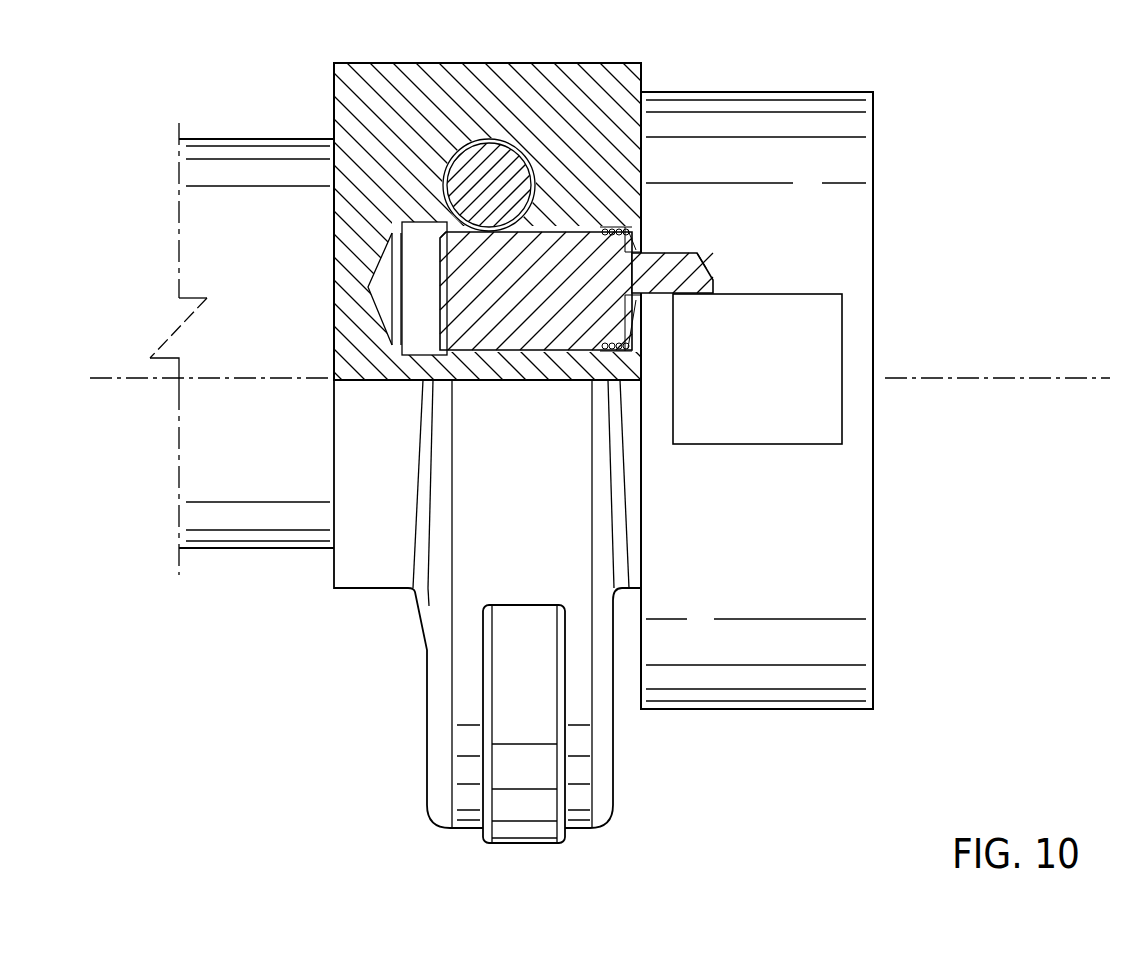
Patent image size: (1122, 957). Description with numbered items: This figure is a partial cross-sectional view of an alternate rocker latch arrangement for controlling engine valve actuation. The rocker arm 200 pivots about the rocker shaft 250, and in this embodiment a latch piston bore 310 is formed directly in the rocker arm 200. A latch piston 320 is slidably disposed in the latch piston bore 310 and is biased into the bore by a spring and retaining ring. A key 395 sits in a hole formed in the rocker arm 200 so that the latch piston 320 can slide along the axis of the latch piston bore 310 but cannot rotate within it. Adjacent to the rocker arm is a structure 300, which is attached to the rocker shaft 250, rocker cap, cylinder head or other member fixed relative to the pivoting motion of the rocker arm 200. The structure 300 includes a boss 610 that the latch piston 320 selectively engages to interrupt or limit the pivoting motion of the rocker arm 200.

The structure 300 is at (332, 234).
The key 395 is at (488, 140).
The latch piston bore 310 is at (577, 228).
The latch piston 320 is at (672, 253).
The boss 610 is at (750, 444).
The rocker shaft 250 is at (258, 548).
The rocker arm 200 is at (418, 769).